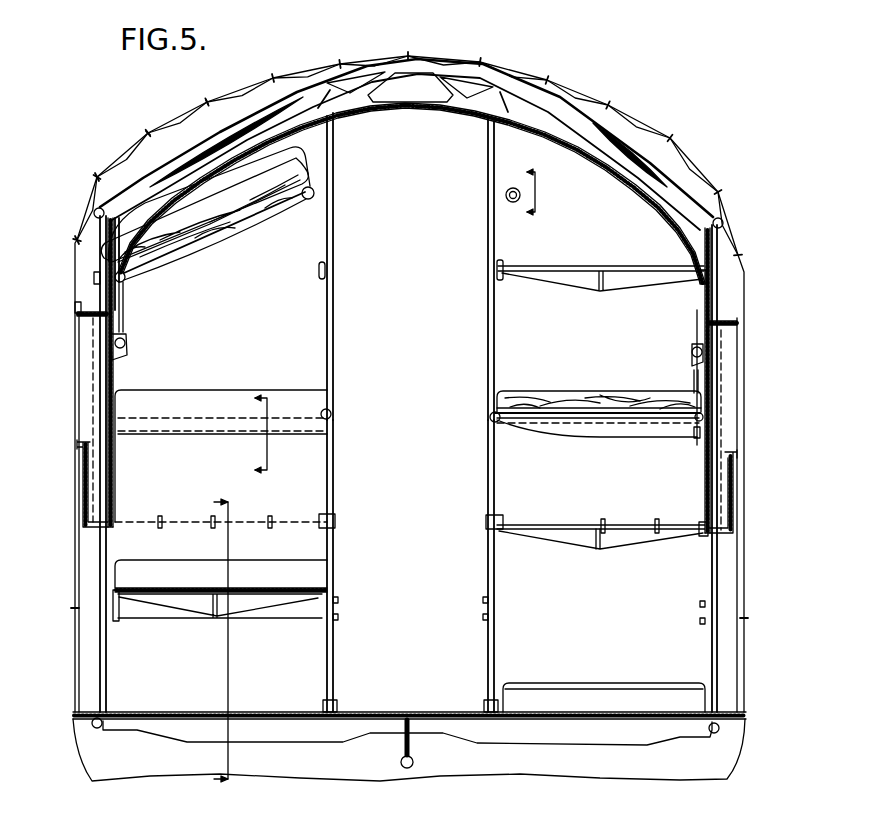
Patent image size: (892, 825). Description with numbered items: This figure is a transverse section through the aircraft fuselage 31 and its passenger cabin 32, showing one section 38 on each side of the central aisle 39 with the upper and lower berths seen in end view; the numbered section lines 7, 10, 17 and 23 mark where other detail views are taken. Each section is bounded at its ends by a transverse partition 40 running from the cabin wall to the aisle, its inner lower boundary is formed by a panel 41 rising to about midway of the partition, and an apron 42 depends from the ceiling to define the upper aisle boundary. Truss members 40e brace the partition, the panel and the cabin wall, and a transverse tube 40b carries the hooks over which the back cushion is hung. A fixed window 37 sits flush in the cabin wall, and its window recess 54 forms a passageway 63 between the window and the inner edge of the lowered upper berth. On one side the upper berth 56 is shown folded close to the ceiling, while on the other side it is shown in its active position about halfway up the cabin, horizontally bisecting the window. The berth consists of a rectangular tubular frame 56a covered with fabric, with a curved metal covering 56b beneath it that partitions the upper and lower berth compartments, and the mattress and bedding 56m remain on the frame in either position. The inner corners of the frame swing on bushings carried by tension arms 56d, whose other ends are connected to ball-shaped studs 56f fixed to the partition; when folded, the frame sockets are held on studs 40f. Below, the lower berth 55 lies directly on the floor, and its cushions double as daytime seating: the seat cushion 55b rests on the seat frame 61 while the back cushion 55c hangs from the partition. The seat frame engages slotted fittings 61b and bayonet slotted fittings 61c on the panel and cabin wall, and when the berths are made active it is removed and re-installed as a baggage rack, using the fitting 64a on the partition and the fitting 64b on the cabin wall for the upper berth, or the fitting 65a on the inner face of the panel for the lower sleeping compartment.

The aircraft fuselage 31 is at (597, 89).
The passenger cabin 32 is at (455, 116).
The section line 23- 23 is at (521, 198).
The window 37 is at (76, 383).
The section 38 is at (409, 706).
The central aisle 39 is at (402, 333).
The transverse partition 40 is at (394, 331).
The transverse tube 40b is at (230, 437).
The truss member 40e is at (246, 520).
The stud 40f is at (333, 196).
The panel 41 is at (335, 571).
The apron 42 is at (333, 164).
The window recess 54 is at (98, 467).
The lower berth 55 is at (575, 679).
The seat cushion 55b is at (152, 562).
The back cushion 55c is at (118, 471).
The upper berth 56 is at (289, 167).
The frame 56a is at (304, 210).
The curved metal covering 56b is at (227, 250).
The tension arm 56d is at (125, 307).
The ball-shaped stud 56f is at (128, 345).
The mattress and bedding 56m is at (180, 260).
The seat frame 61 is at (596, 272).
The slotted fitting 61b is at (337, 618).
The bayonet slotted fitting 61c is at (337, 601).
The passageway 63 is at (90, 423).
The fitting 64a is at (320, 278).
The fitting 64b is at (100, 278).
The fitting 65a is at (335, 538).
The section line 7- 7 is at (209, 647).
The section line 10- 10 is at (247, 440).
The section line 17- 17 is at (755, 443).